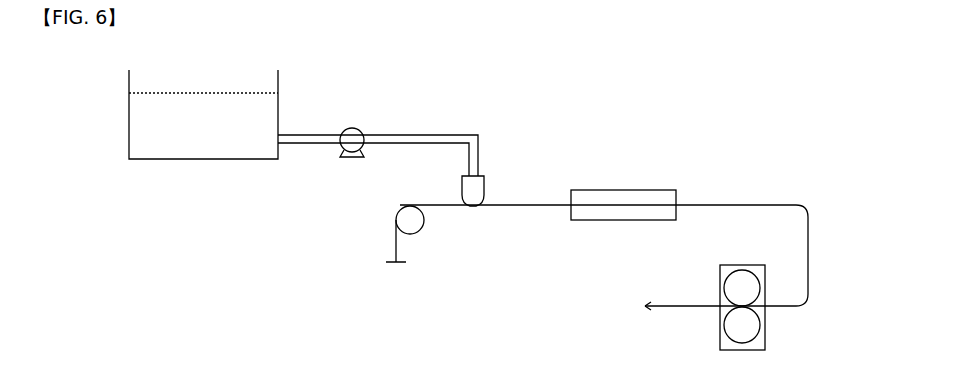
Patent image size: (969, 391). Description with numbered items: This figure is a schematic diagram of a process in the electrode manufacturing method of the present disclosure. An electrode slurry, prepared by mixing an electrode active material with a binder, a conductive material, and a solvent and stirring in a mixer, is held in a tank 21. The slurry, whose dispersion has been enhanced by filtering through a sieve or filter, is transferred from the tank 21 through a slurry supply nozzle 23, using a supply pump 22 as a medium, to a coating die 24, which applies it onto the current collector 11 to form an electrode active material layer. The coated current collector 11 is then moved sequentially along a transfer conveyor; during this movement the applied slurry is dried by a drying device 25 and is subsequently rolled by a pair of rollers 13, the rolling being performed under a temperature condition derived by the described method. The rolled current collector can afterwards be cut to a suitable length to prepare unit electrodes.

The current collector 11 is at (440, 205).
The roller 13 is at (720, 342).
The tank 21 is at (185, 160).
The supply pump 22 is at (350, 157).
The slurry supply nozzle 23 is at (405, 134).
The coating die 24 is at (485, 176).
The drying device 25 is at (608, 190).